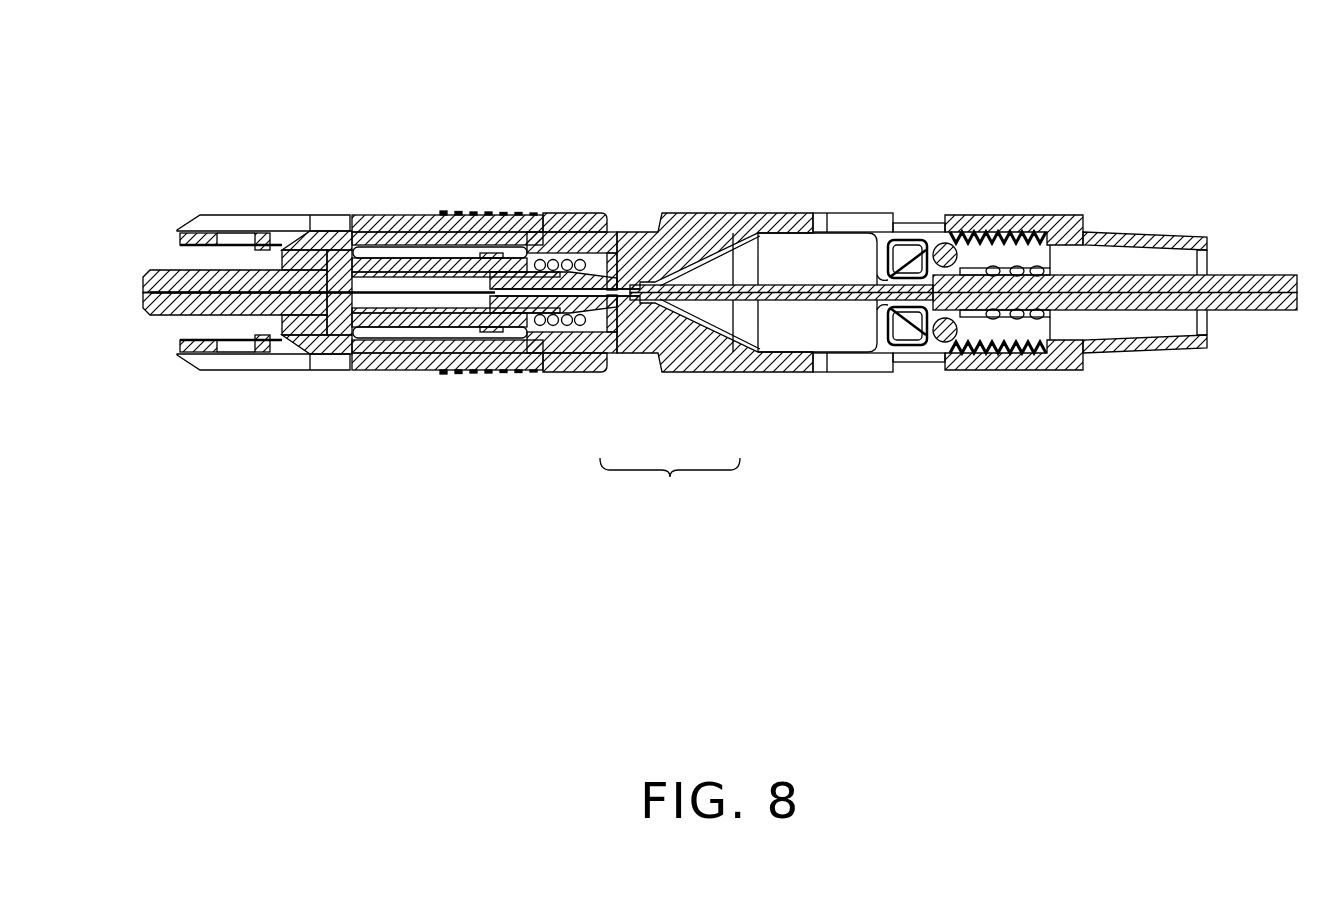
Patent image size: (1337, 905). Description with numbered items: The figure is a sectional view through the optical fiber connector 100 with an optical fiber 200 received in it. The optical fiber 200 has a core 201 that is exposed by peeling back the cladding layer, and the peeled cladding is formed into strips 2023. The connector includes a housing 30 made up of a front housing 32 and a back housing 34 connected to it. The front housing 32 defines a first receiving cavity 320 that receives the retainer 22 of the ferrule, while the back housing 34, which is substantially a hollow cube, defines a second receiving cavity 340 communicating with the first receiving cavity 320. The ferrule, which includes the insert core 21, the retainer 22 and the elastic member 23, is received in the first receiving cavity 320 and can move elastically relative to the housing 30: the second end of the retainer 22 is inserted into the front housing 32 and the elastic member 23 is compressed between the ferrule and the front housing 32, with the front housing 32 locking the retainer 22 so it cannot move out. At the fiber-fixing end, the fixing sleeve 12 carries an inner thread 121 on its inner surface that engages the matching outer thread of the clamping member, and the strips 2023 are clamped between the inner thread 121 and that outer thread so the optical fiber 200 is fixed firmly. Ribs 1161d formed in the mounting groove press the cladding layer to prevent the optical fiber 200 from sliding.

The optical fiber connector 100 is at (581, 95).
The fixing sleeve 12 is at (1072, 222).
The inner thread 121 is at (1043, 343).
The ribs 1161d is at (1038, 268).
The optical fiber 200 is at (1265, 290).
The core 201 is at (553, 285).
The insert core 21 is at (230, 278).
The retainer 22 is at (332, 343).
The elastic member 23 is at (557, 327).
The housing 30 is at (670, 484).
The front housing 32 is at (595, 340).
The back housing 34 is at (730, 357).
The first receiving cavity 320 is at (265, 265).
The second receiving cavity 340 is at (795, 258).
The strips 2023 is at (933, 245).